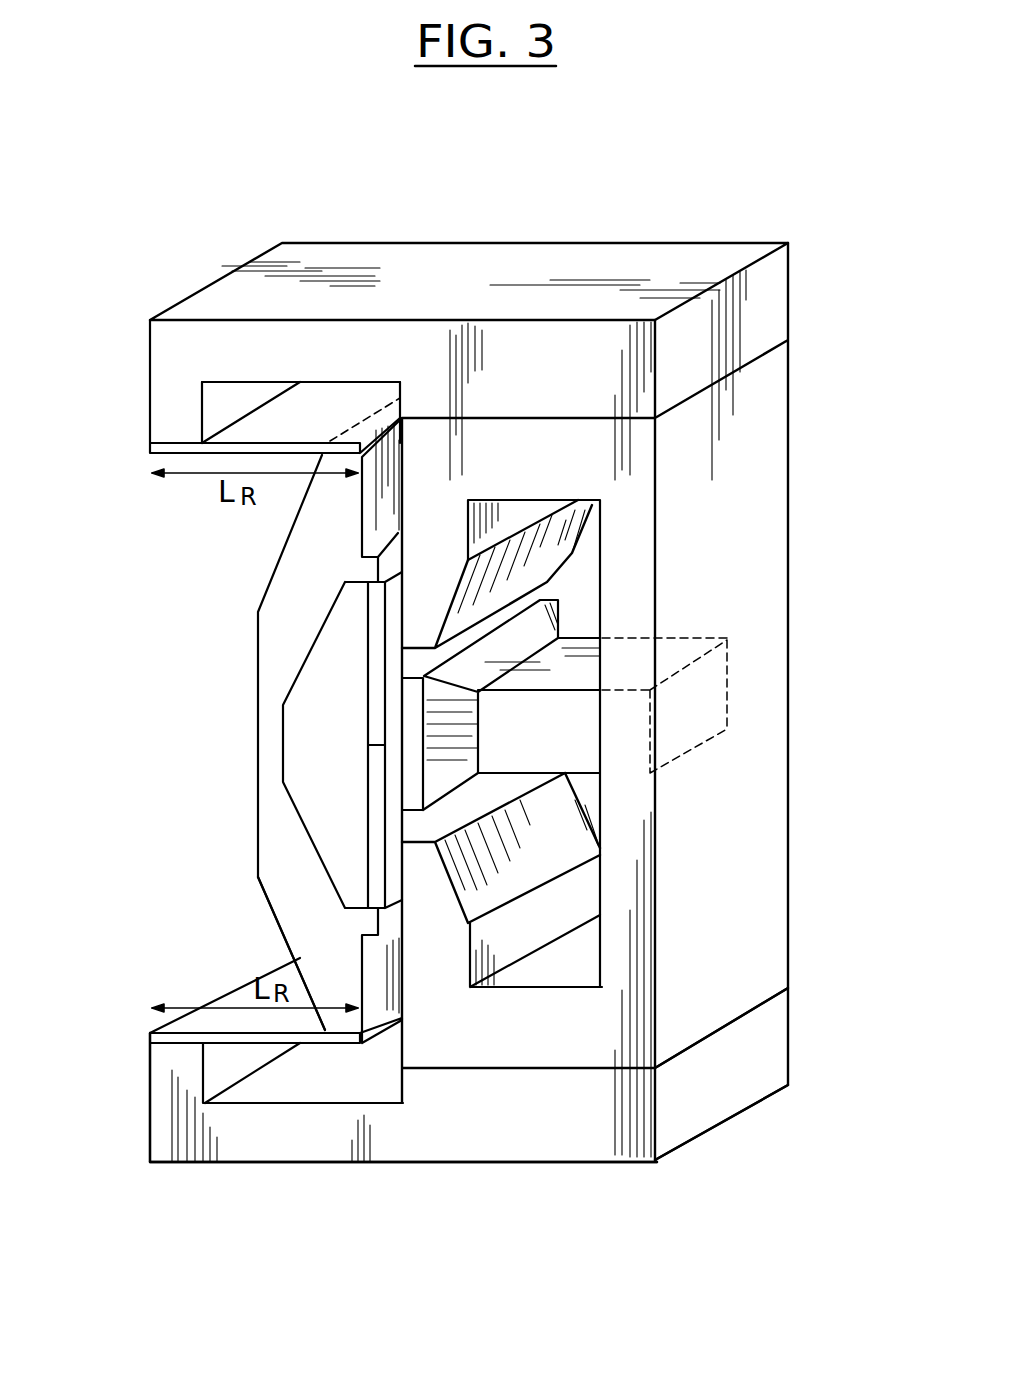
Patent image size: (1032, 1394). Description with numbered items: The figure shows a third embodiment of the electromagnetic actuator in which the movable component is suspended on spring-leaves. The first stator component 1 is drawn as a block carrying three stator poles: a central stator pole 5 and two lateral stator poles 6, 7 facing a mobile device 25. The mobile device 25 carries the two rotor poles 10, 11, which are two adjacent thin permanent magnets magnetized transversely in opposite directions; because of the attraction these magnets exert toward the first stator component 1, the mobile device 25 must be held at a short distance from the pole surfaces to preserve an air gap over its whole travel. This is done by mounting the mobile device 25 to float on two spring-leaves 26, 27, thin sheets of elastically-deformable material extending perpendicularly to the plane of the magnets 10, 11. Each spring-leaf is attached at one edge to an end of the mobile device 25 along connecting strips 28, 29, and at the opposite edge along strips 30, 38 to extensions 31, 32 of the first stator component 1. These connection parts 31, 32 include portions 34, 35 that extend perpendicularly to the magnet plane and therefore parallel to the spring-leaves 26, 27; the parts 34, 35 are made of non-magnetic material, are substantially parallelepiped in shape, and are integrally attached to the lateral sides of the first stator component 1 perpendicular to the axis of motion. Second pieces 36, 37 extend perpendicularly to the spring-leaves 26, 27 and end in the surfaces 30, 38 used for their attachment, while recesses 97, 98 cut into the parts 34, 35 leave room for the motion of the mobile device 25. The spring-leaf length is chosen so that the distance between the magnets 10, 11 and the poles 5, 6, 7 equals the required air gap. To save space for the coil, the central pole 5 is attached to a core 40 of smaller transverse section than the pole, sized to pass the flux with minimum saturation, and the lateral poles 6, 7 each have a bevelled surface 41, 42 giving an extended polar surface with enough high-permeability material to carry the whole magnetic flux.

The first stator component 1 is at (808, 493).
The central stator pole 5 is at (440, 723).
The lateral stator pole 6 is at (445, 568).
The lateral stator pole 7 is at (448, 947).
The first rotor pole 10 is at (378, 663).
The second rotor pole 11 is at (377, 827).
The mobile device 25 is at (233, 741).
The spring-leaf 26 is at (312, 400).
The spring-leaf 27 is at (282, 980).
The connecting strip 28 is at (378, 420).
The connecting strip 29 is at (363, 1045).
The attachment strip 30 is at (172, 443).
The extension of the first stator component 31 is at (375, 1140).
The extension of the first stator component 32 is at (282, 283).
The non-magnetic parallelepiped part 34 is at (550, 1182).
The non-magnetic parallelepiped part 35 is at (585, 289).
The second piece 36 is at (227, 1073).
The second piece 37 is at (218, 407).
The attachment strip 38 is at (178, 1047).
The core 40 is at (583, 713).
The bevelled surface 41 is at (520, 577).
The bevelled surface 42 is at (548, 855).
The recess 97 is at (303, 1083).
The recess 98 is at (250, 387).